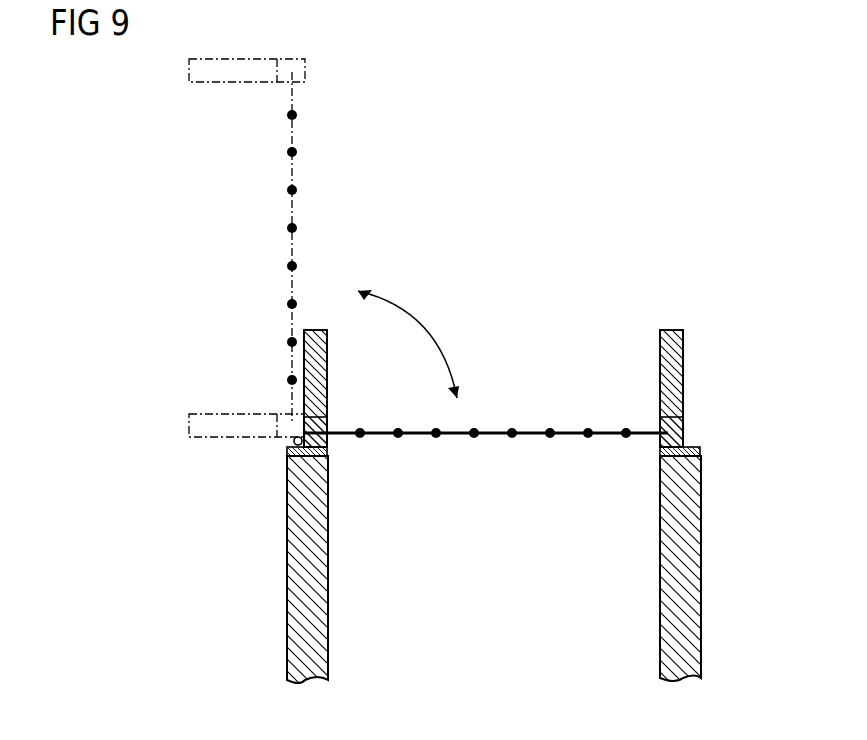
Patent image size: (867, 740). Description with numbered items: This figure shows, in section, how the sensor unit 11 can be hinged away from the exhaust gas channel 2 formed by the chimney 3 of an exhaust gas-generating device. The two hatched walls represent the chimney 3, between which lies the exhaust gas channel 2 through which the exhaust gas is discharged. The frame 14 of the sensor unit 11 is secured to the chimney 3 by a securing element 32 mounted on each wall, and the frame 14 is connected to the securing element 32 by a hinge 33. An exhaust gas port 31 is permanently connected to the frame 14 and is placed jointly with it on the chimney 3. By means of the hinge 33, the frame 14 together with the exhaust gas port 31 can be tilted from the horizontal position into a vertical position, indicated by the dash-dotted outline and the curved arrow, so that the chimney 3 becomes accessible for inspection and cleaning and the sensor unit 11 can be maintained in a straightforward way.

The exhaust gas channel 2 is at (498, 598).
The chimney 3 is at (690, 572).
The sensor unit 11 is at (320, 206).
The frame 14 is at (676, 430).
The exhaust gas port 31 is at (235, 73).
The securing element 32 is at (327, 454).
The hinge 33 is at (294, 446).